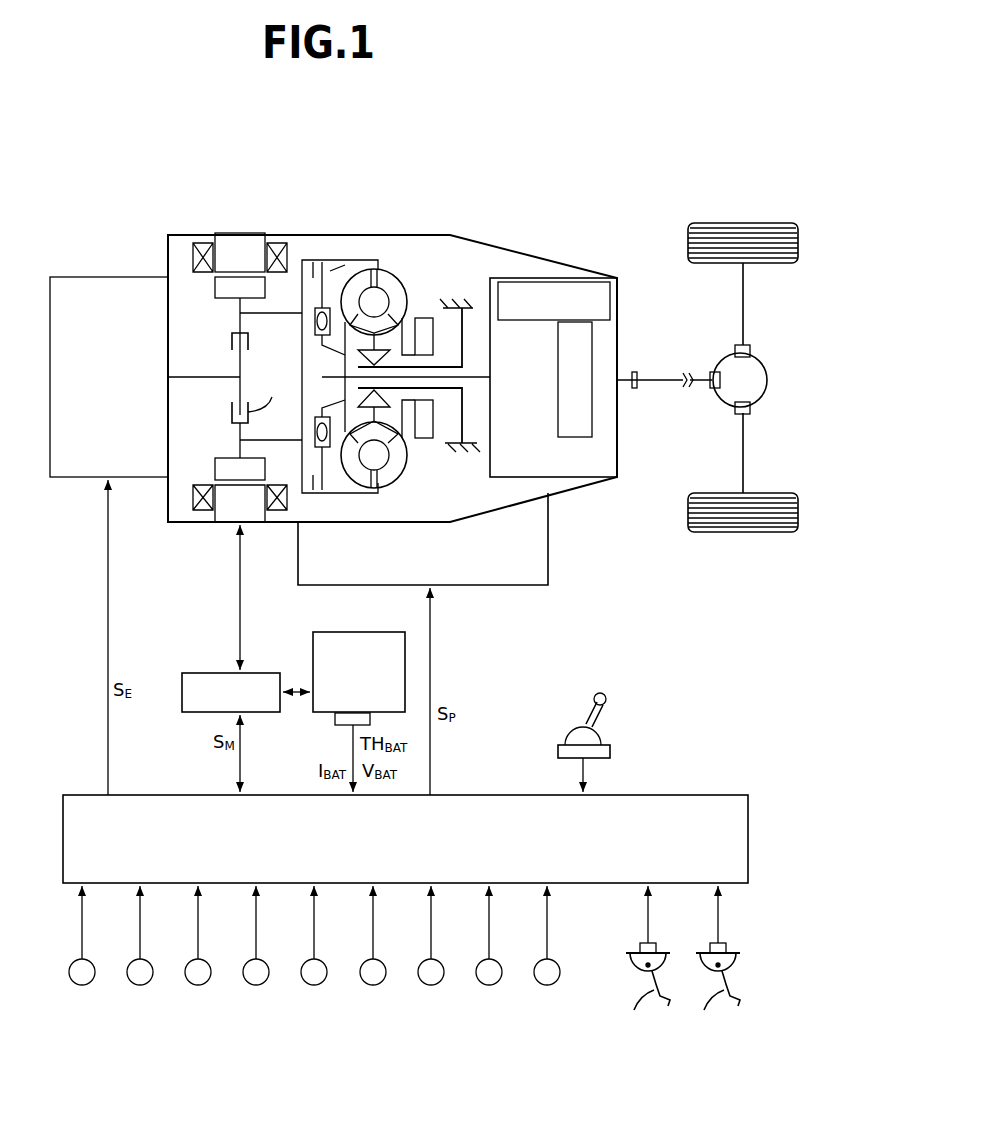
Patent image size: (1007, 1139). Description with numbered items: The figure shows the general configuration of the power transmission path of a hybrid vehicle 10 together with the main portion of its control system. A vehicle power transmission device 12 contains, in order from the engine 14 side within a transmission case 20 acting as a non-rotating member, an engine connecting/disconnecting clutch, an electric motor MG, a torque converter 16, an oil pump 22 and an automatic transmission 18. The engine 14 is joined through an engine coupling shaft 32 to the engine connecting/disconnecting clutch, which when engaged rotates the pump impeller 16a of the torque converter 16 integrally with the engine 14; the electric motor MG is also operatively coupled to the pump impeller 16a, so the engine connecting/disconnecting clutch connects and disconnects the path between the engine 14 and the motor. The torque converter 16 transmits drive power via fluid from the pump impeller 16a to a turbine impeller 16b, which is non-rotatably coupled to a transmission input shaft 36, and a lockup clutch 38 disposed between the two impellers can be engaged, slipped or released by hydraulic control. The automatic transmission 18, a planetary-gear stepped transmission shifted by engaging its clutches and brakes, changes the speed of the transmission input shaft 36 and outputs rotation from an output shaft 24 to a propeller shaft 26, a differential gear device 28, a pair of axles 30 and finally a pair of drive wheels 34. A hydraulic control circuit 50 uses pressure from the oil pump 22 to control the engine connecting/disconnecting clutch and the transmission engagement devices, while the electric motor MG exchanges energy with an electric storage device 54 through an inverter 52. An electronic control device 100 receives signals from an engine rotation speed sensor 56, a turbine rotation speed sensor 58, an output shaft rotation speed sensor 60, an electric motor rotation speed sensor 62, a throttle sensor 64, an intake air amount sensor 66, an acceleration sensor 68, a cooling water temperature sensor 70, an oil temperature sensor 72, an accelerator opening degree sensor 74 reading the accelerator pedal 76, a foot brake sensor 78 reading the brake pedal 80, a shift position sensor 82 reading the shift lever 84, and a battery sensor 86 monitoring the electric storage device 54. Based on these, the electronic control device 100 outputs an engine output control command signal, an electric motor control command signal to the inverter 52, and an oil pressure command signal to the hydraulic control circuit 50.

The hybrid vehicle 10 is at (560, 145).
The vehicle power transmission device 12 is at (381, 188).
The engine 14 is at (75, 278).
The torque converter 16 is at (407, 265).
The pump impeller 16a is at (393, 468).
The turbine impeller 16b is at (352, 466).
The automatic transmission 18 is at (603, 328).
The transmission case 20 is at (403, 233).
The oil pump 22 is at (425, 437).
The output shaft 24 is at (624, 372).
The propeller shaft 26 is at (662, 382).
The differential gear device 28 is at (757, 363).
The axles 30 is at (743, 305).
The engine coupling shaft 32 is at (203, 377).
The drive wheels 34 is at (690, 245).
The transmission input shaft 36 is at (477, 378).
The lockup clutch 38 is at (338, 262).
The hydraulic control circuit 50 is at (548, 533).
The inverter 52 is at (184, 710).
The electric storage device 54 is at (321, 634).
The engine rotation speed sensor 56 is at (85, 985).
The turbine rotation speed sensor 58 is at (143, 985).
The output shaft rotation speed sensor 60 is at (201, 985).
The electric motor rotation speed sensor 62 is at (259, 985).
The throttle sensor 64 is at (317, 985).
The intake air amount sensor 66 is at (376, 985).
The acceleration sensor 68 is at (434, 985).
The cooling water temperature sensor 70 is at (492, 985).
The oil temperature sensor 72 is at (550, 985).
The accelerator opening degree sensor 74 is at (641, 947).
The accelerator pedal 76 is at (645, 1006).
The foot brake sensor 78 is at (711, 947).
The brake pedal 80 is at (716, 1006).
The shift position sensor 82 is at (558, 750).
The shift lever 84 is at (597, 693).
The battery sensor 86 is at (333, 719).
The electronic control device 100 is at (678, 806).